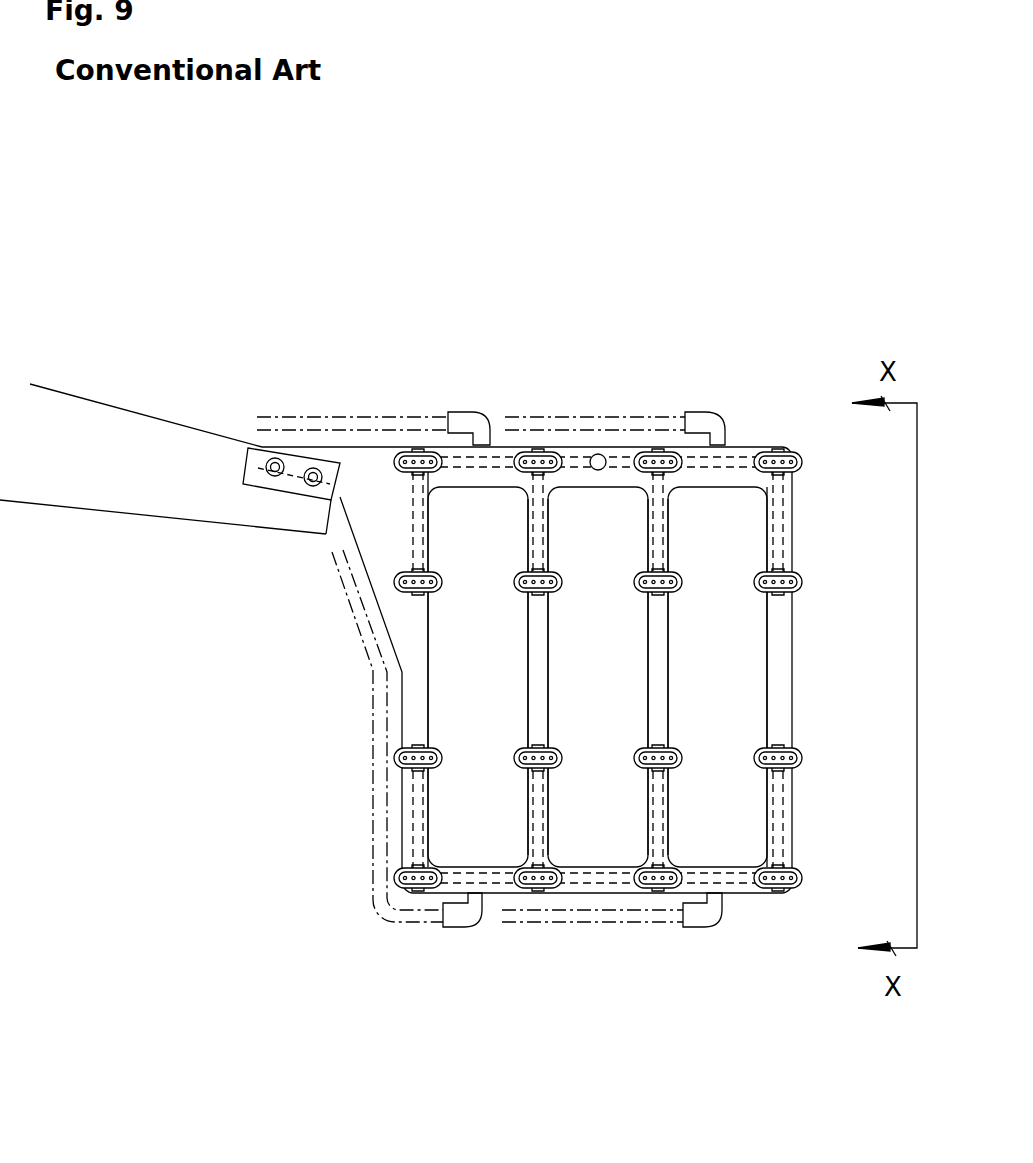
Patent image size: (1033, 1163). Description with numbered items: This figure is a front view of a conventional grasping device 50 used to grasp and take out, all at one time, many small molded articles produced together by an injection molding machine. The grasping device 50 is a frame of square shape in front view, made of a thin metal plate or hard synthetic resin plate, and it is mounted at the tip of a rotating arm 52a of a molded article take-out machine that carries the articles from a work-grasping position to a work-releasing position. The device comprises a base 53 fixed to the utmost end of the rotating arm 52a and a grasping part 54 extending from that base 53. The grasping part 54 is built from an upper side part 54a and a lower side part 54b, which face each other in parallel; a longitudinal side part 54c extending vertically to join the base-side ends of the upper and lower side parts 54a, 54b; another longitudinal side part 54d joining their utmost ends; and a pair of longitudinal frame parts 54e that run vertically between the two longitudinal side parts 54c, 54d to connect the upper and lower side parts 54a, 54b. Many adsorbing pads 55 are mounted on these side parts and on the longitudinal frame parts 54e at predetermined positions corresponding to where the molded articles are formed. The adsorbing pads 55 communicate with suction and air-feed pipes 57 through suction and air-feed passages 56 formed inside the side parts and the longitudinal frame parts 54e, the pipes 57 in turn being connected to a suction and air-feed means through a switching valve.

The grasping device 50 is at (760, 440).
The rotating arm 52a is at (143, 517).
The base 53 is at (345, 480).
The grasping part 54 is at (790, 553).
The upper side part 54a is at (617, 487).
The lower side part 54b is at (588, 883).
The longitudinal side part 54c is at (425, 703).
The longitudinal side part 54d is at (775, 693).
The longitudinal frame parts 54e is at (545, 680).
The adsorbing pads 55 is at (535, 592).
The suction and air-feed passages 56 is at (497, 468).
The suction and air-feed pipes 57 is at (410, 417).